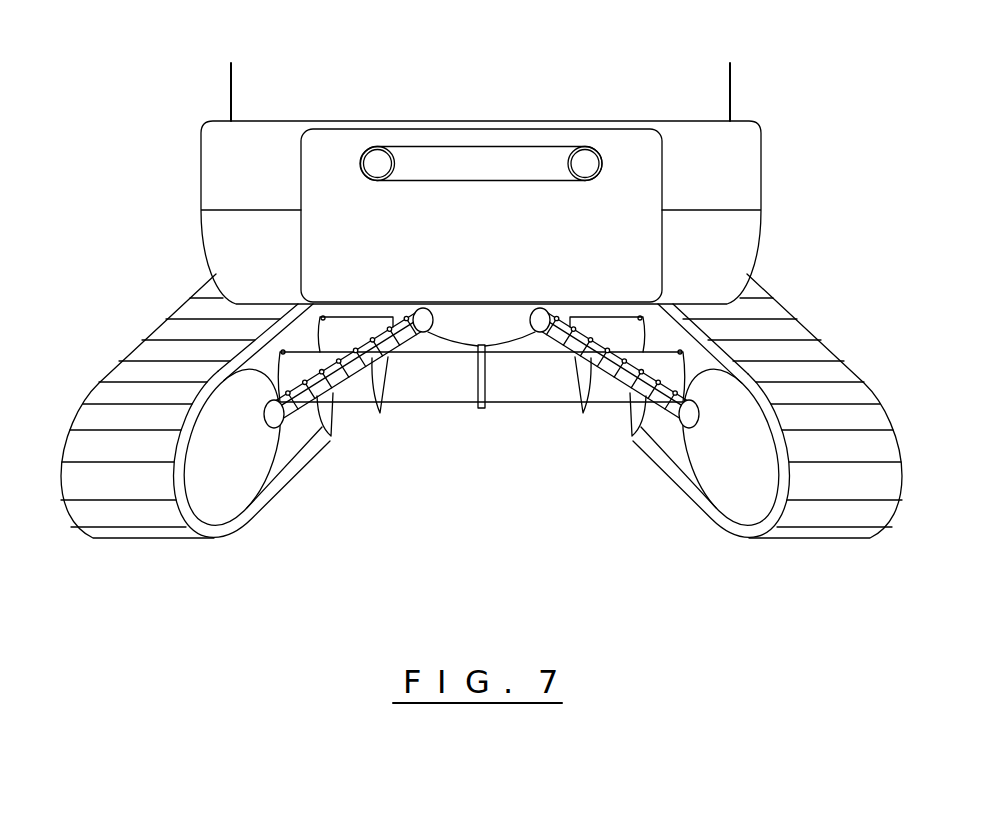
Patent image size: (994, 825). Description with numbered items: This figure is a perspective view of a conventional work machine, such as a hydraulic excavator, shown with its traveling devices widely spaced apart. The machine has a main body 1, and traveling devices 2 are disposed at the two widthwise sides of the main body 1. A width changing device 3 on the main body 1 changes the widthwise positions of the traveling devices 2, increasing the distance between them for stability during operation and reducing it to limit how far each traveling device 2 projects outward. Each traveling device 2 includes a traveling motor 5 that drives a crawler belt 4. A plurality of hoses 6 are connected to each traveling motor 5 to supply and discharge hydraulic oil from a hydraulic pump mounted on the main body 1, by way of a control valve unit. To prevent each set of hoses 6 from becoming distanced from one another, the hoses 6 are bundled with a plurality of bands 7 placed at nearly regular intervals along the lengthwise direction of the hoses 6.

The main body 1 is at (762, 113).
The traveling device 2 is at (137, 548).
The width changing device 3 is at (462, 413).
The crawler belt 4 is at (131, 373).
The traveling motor 5 is at (234, 489).
The hose 6 is at (331, 437).
The band 7 is at (380, 414).